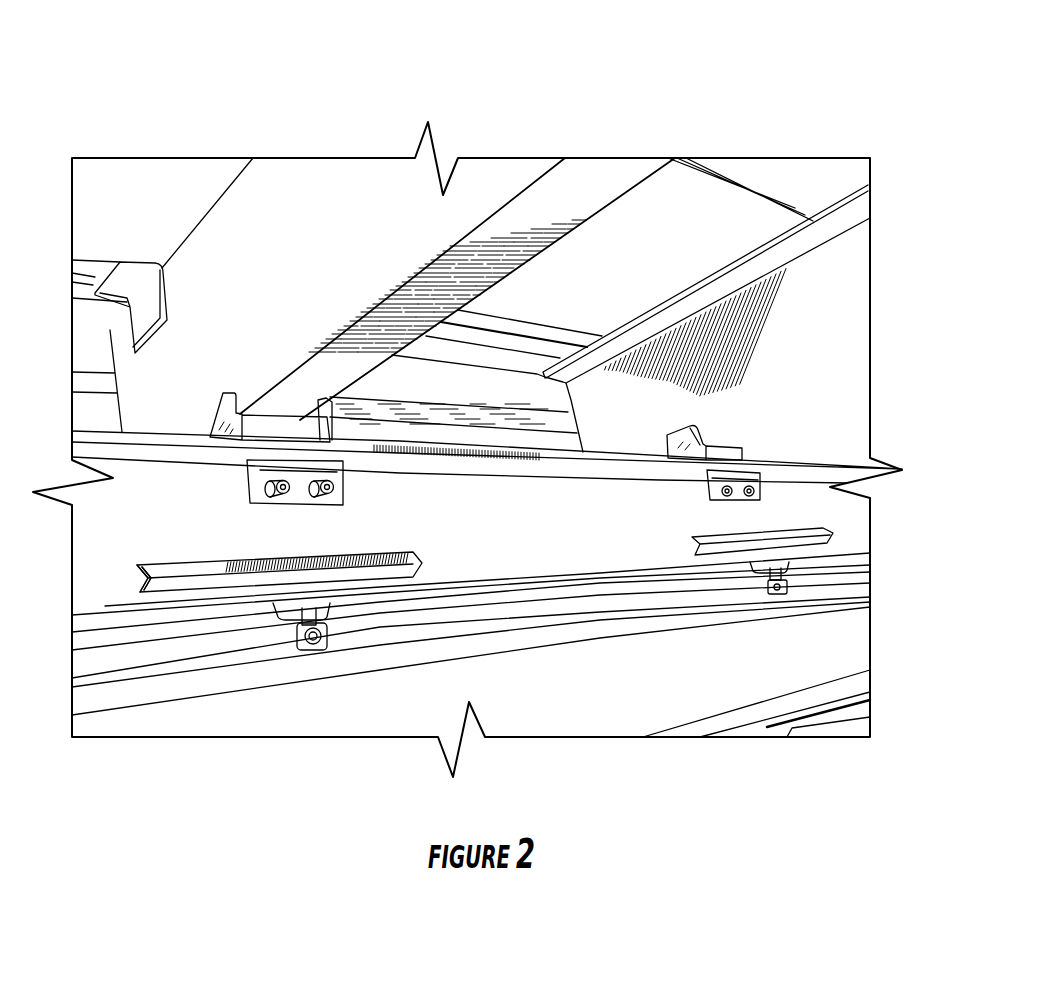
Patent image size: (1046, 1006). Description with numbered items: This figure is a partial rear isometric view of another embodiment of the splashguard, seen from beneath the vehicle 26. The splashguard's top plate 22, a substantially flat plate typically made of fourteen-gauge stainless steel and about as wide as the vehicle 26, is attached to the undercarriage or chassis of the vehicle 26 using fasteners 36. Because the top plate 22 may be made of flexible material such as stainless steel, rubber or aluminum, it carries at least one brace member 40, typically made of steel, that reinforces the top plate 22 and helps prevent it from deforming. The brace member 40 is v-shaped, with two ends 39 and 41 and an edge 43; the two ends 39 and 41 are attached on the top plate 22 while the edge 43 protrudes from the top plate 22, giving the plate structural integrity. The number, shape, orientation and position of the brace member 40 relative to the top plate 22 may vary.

The top plate 22 is at (631, 542).
The vehicle 26 is at (816, 158).
The fasteners 36 is at (205, 417).
The end 39 is at (137, 571).
The brace member 40 is at (424, 565).
The end 41 is at (138, 588).
The edge 43 is at (417, 557).